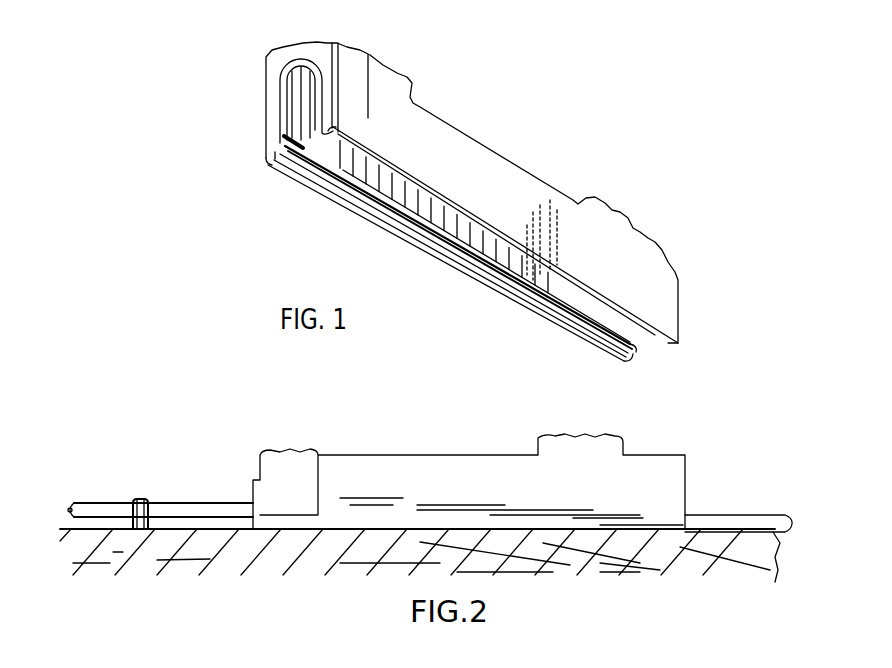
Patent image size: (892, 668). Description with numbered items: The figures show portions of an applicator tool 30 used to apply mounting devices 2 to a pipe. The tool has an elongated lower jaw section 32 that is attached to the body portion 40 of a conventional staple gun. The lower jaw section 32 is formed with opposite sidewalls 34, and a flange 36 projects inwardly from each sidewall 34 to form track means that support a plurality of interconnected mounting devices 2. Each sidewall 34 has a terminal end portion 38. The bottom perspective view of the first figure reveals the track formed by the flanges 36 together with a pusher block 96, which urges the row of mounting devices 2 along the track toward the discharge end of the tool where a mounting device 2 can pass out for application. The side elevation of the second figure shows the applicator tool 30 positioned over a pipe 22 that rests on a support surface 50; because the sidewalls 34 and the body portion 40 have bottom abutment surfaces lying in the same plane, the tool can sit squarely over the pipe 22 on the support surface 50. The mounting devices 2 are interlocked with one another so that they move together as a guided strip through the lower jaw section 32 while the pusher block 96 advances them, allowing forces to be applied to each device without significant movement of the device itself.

In FIG. 1, the mounting device 2 is at (413, 250).
In FIG. 2, the mounting device 2 is at (137, 499).
In FIG. 2, the pipe 22 is at (197, 503).
In FIG. 1, the applicator tool 30 is at (562, 156).
In FIG. 2, the applicator tool 30 is at (388, 447).
In FIG. 1, the elongated lower jaw section 32 is at (463, 283).
In FIG. 1, the sidewall 34 is at (626, 362).
In FIG. 2, the sidewall 34 is at (668, 488).
In FIG. 1, the flange 36 is at (383, 213).
In FIG. 1, the terminal end portion 38 is at (331, 130).
In FIG. 1, the body portion 40 is at (308, 53).
In FIG. 2, the support surface 50 is at (420, 555).
In FIG. 1, the pusher block 96 is at (534, 293).